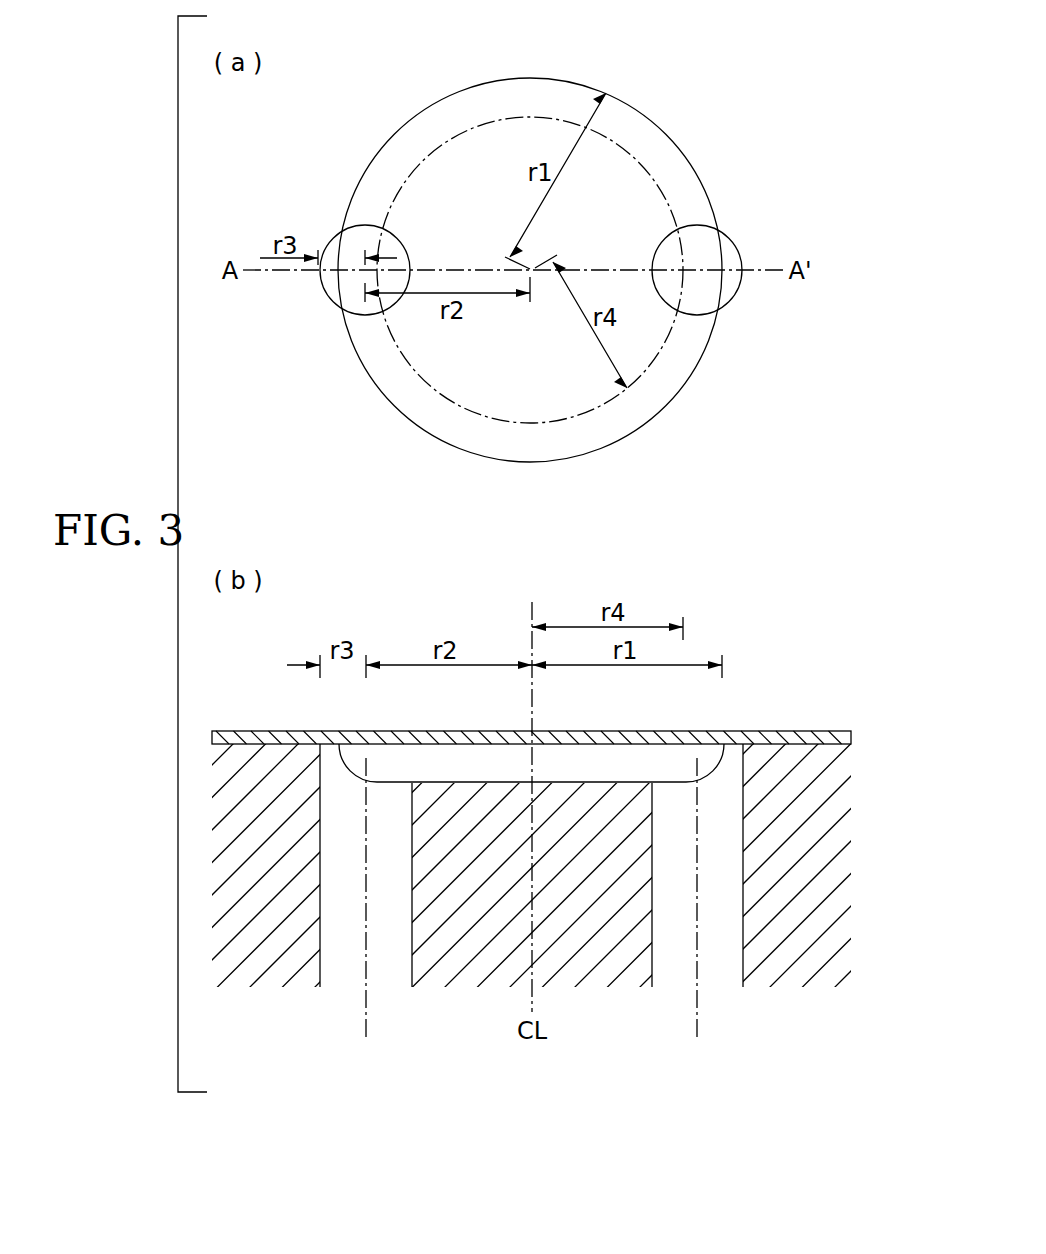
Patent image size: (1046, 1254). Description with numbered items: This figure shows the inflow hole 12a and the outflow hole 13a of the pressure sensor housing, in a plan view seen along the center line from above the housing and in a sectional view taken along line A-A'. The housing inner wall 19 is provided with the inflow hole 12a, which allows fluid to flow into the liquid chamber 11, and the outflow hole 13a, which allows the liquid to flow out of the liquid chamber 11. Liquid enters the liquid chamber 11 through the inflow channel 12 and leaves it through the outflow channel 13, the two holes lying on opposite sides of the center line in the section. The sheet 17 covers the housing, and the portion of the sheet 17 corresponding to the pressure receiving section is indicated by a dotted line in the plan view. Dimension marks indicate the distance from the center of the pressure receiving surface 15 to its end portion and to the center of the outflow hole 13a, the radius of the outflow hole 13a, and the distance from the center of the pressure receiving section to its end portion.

The liquid chamber 11 is at (588, 767).
The inflow channel 12 is at (722, 963).
The inflow hole 12a is at (708, 252).
The outflow channel 13 is at (348, 967).
The outflow hole 13a is at (347, 288).
The pressure receiving surface 15 is at (457, 747).
The sheet 17 is at (232, 730).
The housing inner wall 19 is at (525, 365).